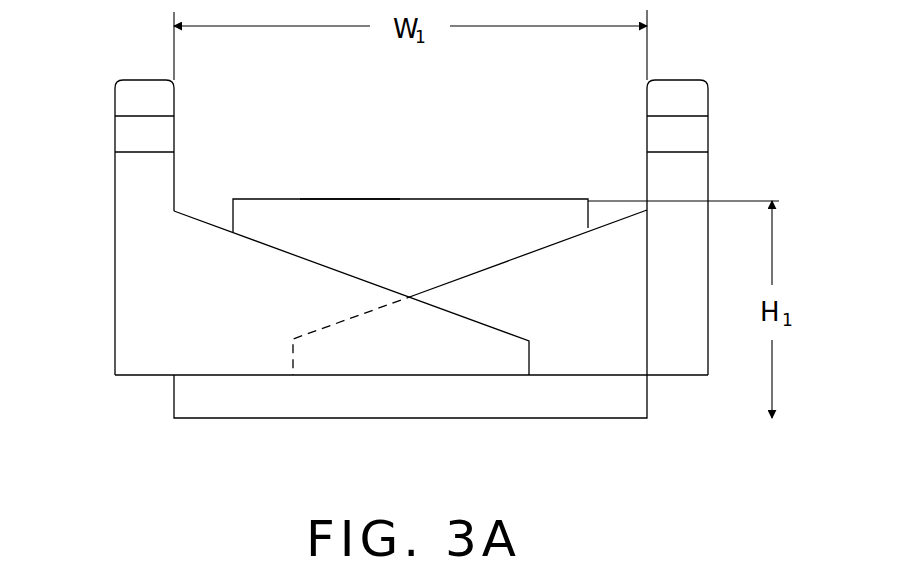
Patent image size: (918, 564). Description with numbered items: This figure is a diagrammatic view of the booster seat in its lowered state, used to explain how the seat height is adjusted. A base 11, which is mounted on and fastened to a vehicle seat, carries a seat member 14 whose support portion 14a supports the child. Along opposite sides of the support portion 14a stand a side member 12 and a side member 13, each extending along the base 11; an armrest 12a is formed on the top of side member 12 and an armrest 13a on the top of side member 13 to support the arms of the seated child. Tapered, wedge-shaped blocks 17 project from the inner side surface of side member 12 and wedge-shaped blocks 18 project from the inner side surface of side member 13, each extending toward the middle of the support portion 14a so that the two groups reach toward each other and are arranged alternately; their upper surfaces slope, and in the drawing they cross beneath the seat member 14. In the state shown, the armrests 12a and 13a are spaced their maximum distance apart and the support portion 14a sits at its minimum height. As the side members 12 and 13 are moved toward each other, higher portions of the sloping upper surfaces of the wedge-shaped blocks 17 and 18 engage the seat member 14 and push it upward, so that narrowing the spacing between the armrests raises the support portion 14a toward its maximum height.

The base 11 is at (450, 421).
The side member 12 is at (113, 355).
The armrest 12a is at (132, 93).
The side member 13 is at (711, 168).
The armrest 13a is at (693, 100).
The seat member 14 is at (452, 196).
The support portion 14a is at (338, 192).
The wedge-shaped block 17 is at (218, 248).
The wedge-shaped block 18 is at (556, 258).